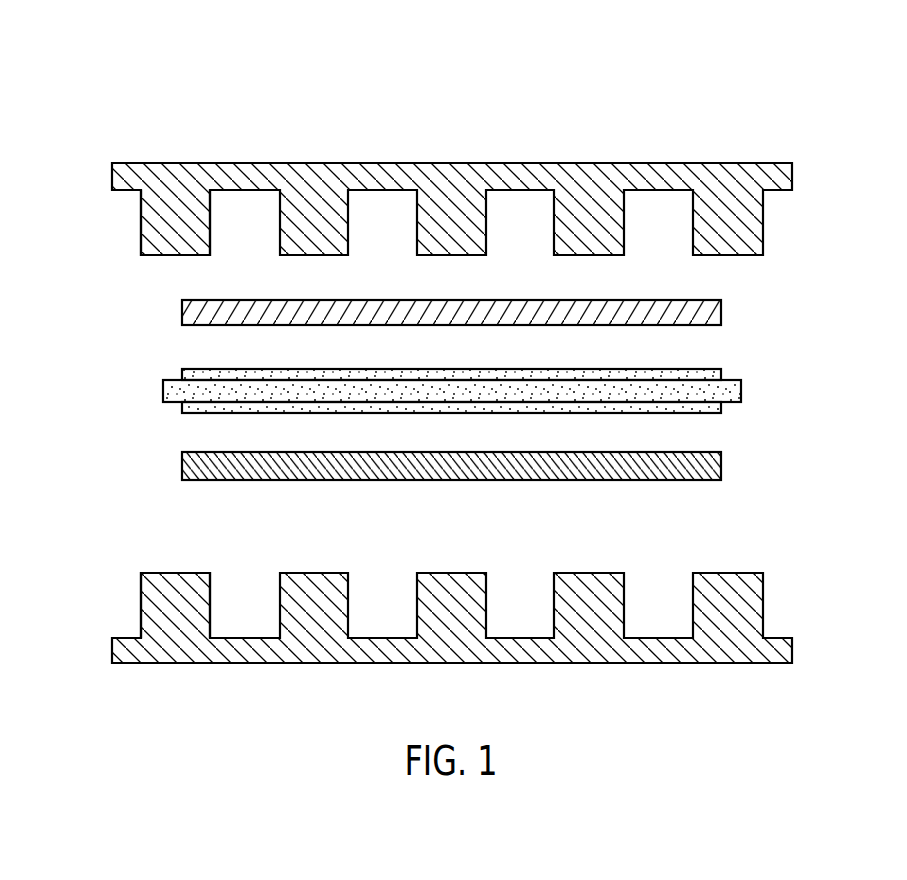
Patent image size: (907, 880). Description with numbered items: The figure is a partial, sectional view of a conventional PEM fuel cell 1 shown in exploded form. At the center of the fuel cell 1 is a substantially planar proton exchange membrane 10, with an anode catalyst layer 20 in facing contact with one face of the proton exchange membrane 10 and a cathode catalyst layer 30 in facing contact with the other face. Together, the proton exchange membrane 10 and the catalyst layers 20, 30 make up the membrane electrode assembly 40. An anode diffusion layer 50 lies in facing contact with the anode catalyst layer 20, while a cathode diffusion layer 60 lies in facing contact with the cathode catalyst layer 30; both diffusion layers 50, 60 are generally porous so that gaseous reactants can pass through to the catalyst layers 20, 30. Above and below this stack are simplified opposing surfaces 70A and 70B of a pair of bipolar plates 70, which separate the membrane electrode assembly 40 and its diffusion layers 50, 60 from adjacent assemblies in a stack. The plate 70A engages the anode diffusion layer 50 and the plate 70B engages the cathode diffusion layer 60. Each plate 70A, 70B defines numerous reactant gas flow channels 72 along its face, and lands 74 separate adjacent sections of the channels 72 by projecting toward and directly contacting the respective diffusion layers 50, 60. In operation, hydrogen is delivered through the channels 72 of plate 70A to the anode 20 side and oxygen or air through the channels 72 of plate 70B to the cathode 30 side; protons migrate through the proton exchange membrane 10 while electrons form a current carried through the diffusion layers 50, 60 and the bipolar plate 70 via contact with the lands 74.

The fuel cell 1 is at (545, 99).
The proton exchange membrane 10 is at (163, 392).
The anode catalyst layer 20 is at (182, 372).
The cathode catalyst layer 30 is at (182, 408).
The membrane electrode assembly 40 is at (758, 359).
The anode diffusion layer 50 is at (182, 312).
The cathode diffusion layer 60 is at (182, 466).
The bipolar plate 70 is at (803, 174).
The plate 70A is at (112, 177).
The plate 70B is at (112, 647).
The reactant gas flow channels 72 is at (229, 231).
The lands 74 is at (141, 218).